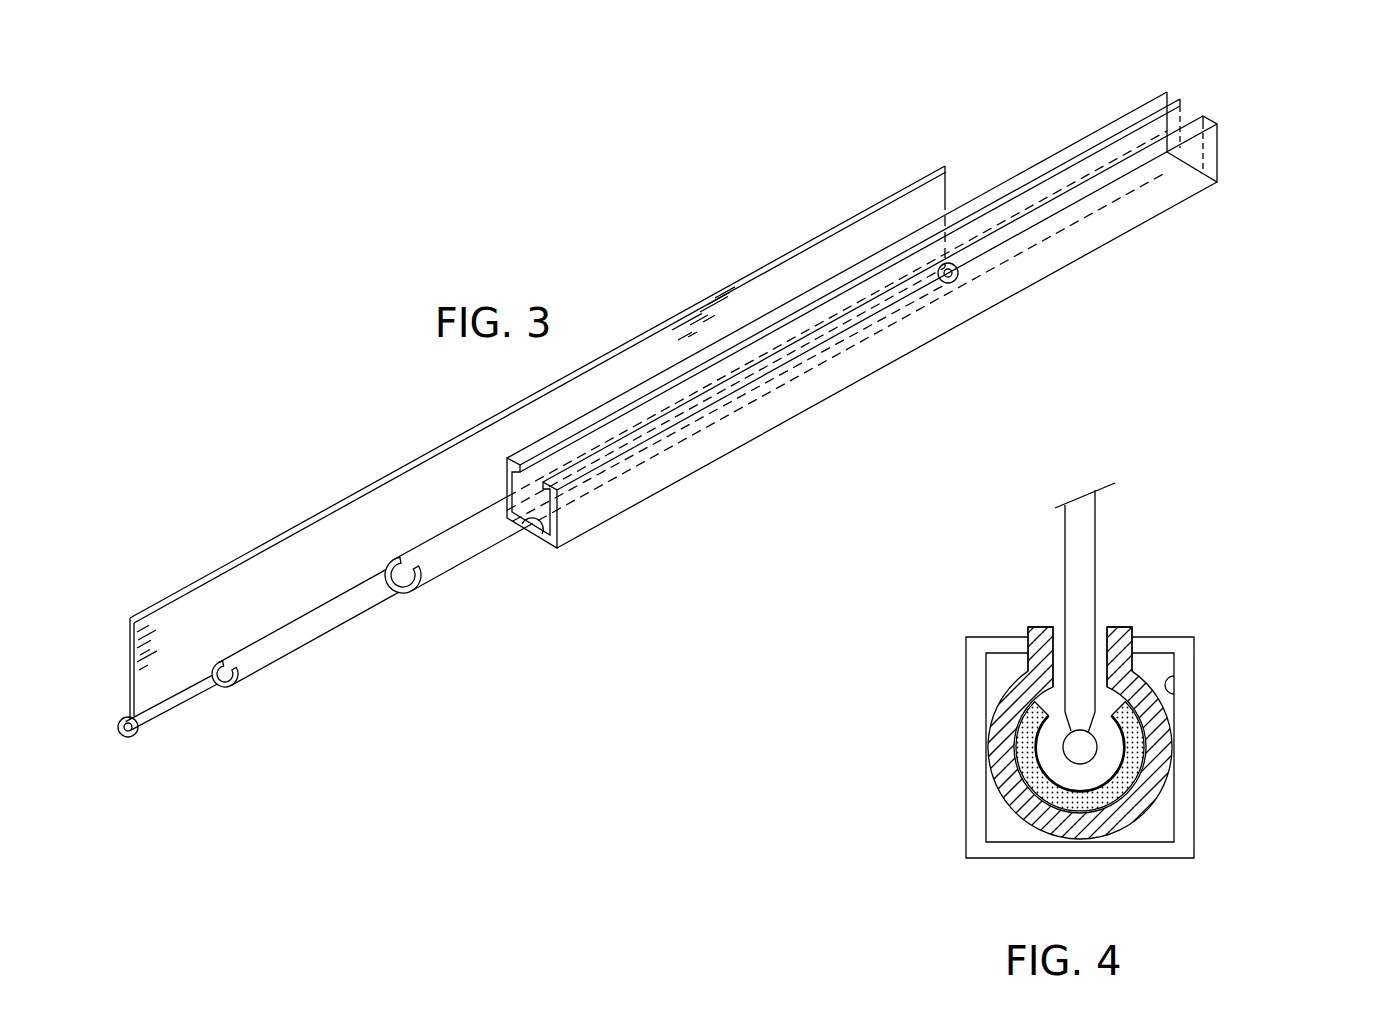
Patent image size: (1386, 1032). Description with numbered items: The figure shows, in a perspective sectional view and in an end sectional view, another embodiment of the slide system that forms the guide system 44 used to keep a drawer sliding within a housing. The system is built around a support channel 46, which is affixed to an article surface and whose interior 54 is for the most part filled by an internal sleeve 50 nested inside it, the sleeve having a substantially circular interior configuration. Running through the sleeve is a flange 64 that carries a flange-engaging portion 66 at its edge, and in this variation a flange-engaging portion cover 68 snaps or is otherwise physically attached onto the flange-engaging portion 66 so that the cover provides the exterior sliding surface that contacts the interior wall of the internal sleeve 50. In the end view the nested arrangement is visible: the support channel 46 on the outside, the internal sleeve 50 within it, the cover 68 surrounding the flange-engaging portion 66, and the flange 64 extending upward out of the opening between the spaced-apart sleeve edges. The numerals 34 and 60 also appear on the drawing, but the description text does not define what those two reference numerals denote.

In FIG. 4, the inner surface of channel 34 is at (1166, 684).
In FIG. 4, the guide system 44 is at (1307, 605).
In FIG. 3, the support channel 46 is at (686, 478).
In FIG. 4, the support channel 46 is at (1195, 663).
In FIG. 3, the internal sleeve 50 is at (437, 570).
In FIG. 4, the internal sleeve 50 is at (1003, 810).
In FIG. 3, the interior of support channel 54 is at (523, 530).
In FIG. 4, the flanges 60 is at (1026, 648).
In FIG. 3, the flange 64 is at (331, 468).
In FIG. 4, the flange 64 is at (1132, 555).
In FIG. 3, the flange-engaging portion 66 is at (183, 706).
In FIG. 4, the flange-engaging portion 66 is at (1090, 770).
In FIG. 3, the flange-engaging portion cover 68 is at (292, 650).
In FIG. 4, the flange-engaging portion cover 68 is at (1132, 763).